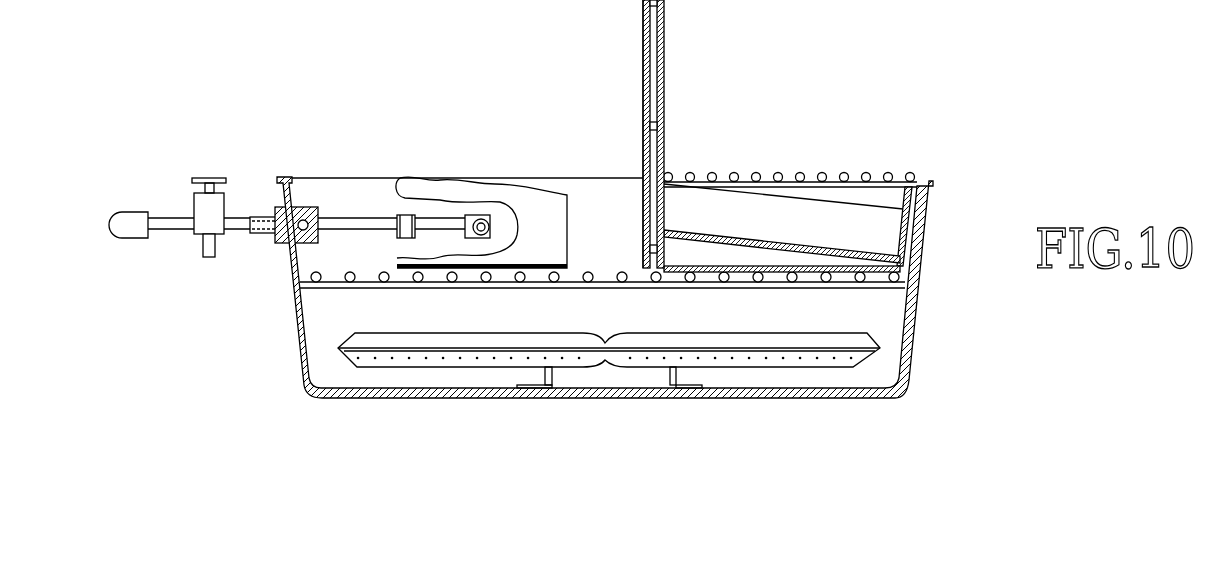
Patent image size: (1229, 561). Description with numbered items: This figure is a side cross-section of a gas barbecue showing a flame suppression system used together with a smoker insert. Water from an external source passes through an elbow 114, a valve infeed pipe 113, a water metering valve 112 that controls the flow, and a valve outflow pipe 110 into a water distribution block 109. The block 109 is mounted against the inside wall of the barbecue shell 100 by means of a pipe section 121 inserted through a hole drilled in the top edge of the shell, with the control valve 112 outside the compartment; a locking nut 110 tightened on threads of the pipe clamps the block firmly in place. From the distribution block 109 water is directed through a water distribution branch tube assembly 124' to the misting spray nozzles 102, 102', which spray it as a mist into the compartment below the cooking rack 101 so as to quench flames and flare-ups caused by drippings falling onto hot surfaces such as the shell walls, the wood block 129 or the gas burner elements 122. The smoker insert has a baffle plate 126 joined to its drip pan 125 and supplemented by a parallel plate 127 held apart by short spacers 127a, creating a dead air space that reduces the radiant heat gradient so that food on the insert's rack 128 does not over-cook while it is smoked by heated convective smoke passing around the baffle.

The barbecue shell 100 is at (918, 265).
The cooking rack 101 is at (903, 290).
The misting spray nozzle 102 is at (481, 193).
The misting spray nozzle 102' is at (805, 135).
The water distribution block 109 is at (316, 205).
The valve outflow pipe 110 is at (278, 207).
The water metering valve 112 is at (203, 252).
The valve infeed pipe 113 is at (166, 217).
The elbow 114 is at (120, 239).
The pipe section 121 is at (255, 234).
The gas burner element 122 is at (856, 368).
The water distribution branch tube assembly 124' is at (782, 133).
The drip pan 125 is at (852, 288).
The baffle plate 126 is at (665, 80).
The parallel plate 127 is at (643, 13).
The short spacer 127a is at (665, 127).
The rack 128 is at (842, 176).
The wood block 129 is at (859, 138).